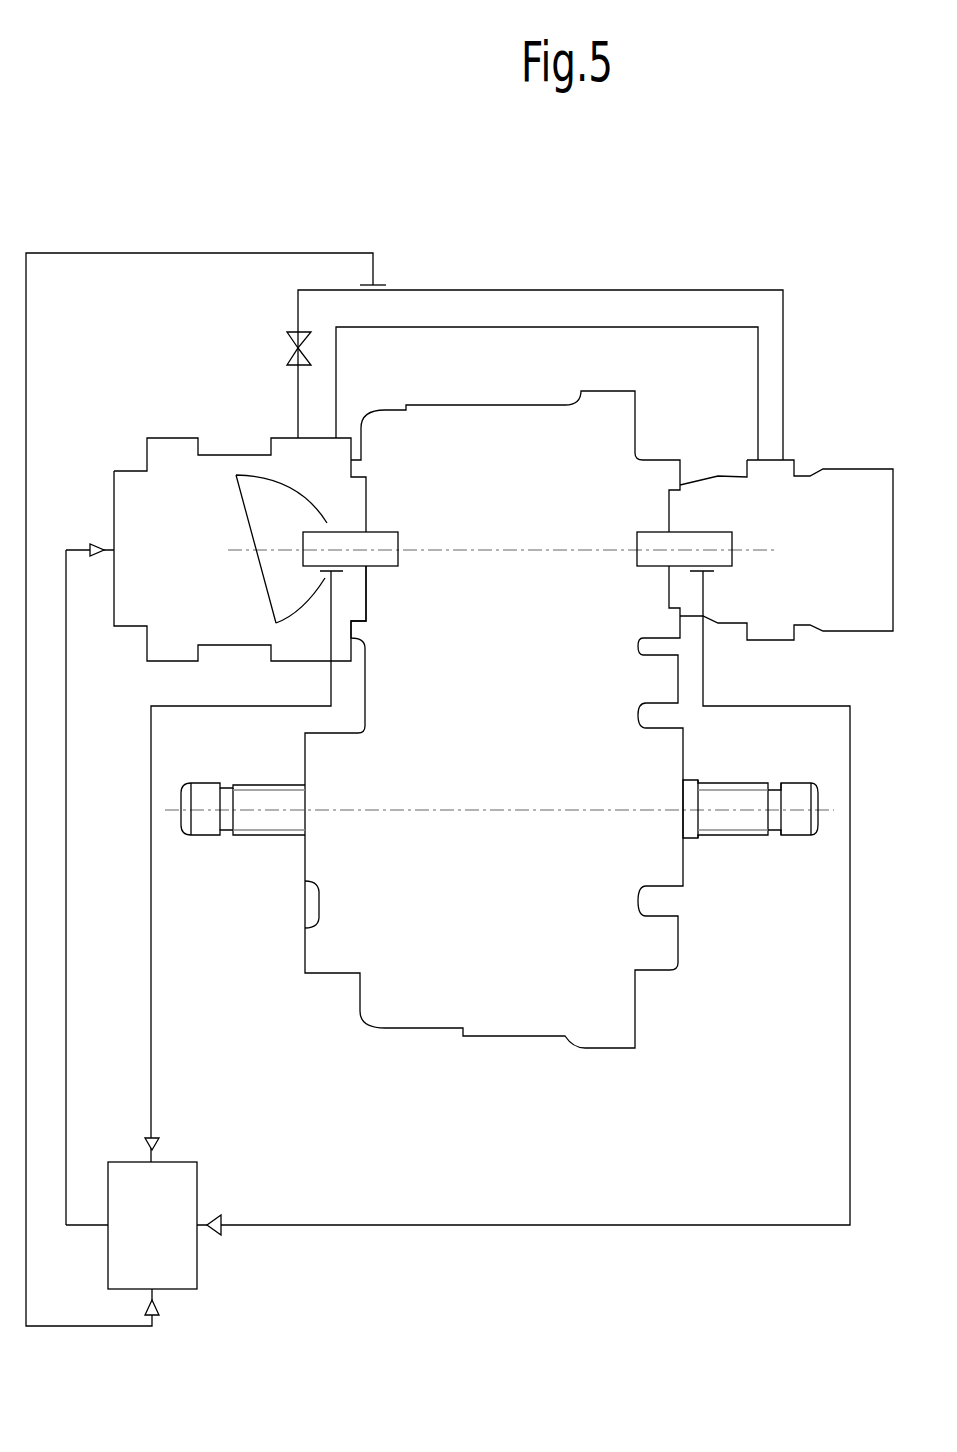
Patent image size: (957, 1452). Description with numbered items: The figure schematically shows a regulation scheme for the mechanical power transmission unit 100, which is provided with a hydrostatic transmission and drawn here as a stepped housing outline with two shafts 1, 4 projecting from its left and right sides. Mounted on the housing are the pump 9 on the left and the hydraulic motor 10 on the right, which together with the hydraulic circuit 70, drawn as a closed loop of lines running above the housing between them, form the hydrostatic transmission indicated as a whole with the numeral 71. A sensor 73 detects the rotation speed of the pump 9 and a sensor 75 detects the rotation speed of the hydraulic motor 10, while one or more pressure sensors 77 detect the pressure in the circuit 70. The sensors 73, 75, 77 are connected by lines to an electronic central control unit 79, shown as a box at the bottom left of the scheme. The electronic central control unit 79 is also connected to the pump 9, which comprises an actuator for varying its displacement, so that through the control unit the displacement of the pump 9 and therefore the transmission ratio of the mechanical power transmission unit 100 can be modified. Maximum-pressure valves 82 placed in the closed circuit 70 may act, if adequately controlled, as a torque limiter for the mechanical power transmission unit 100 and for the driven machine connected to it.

The first shaft 1 is at (260, 823).
The second shaft 4 is at (750, 828).
The pump 9 is at (180, 482).
The hydraulic motor 10 is at (844, 487).
The hydraulic circuit 70 is at (635, 329).
The hydrostatic transmission 71 is at (540, 236).
The sensor 73 is at (340, 575).
The sensor 75 is at (698, 575).
The pressure sensor 77 is at (383, 287).
The electronic central control unit 79 is at (190, 1197).
The maximum-pressure valve 82 is at (293, 358).
The mechanical power transmission unit 100 is at (505, 1064).